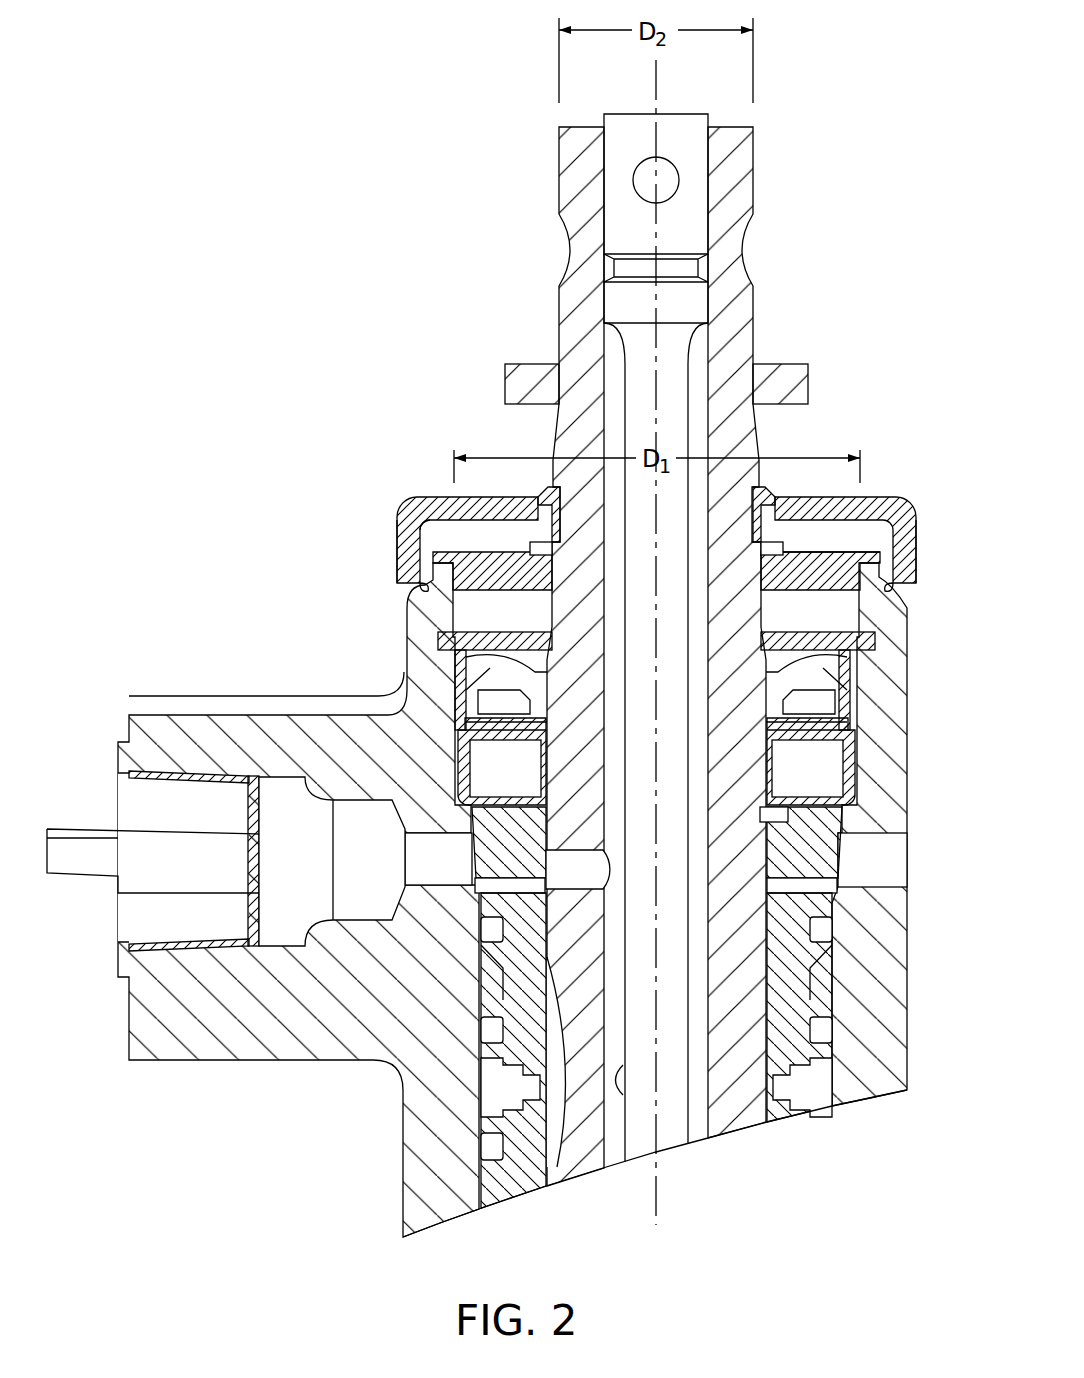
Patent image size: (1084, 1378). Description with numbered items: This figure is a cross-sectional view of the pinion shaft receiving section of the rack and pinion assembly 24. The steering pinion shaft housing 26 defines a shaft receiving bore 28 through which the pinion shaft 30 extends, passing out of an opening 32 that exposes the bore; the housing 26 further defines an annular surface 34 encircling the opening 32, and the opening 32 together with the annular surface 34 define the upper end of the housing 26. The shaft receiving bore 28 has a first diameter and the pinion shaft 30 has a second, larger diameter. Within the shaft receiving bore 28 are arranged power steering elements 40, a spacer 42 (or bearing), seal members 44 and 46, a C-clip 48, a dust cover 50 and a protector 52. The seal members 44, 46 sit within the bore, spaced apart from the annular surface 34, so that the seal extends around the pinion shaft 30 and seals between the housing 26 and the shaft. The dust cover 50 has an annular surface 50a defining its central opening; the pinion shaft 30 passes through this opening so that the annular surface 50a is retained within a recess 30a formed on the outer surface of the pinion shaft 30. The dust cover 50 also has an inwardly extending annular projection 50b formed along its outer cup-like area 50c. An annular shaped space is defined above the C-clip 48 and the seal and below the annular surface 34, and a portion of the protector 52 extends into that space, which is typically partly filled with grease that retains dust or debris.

The rack and pinion assembly 24 is at (195, 487).
The steering pinion shaft housing 26 is at (883, 758).
The shaft receiving bore 28 is at (608, 387).
The pinion shaft 30 is at (731, 170).
The recess 30a is at (539, 488).
The opening 32 is at (850, 558).
The annular surface 34 is at (420, 530).
The power steering elements 40 is at (581, 1123).
The spacer 42 is at (857, 773).
The seal member 44 is at (853, 698).
The seal member 46 is at (845, 670).
The C-clip 48 is at (863, 642).
The dust cover 50 is at (900, 522).
The annular surface 50a is at (548, 528).
The inwardly extending annular projection 50b is at (425, 588).
The outer cup-like area 50c is at (397, 560).
The protector 52 is at (483, 568).